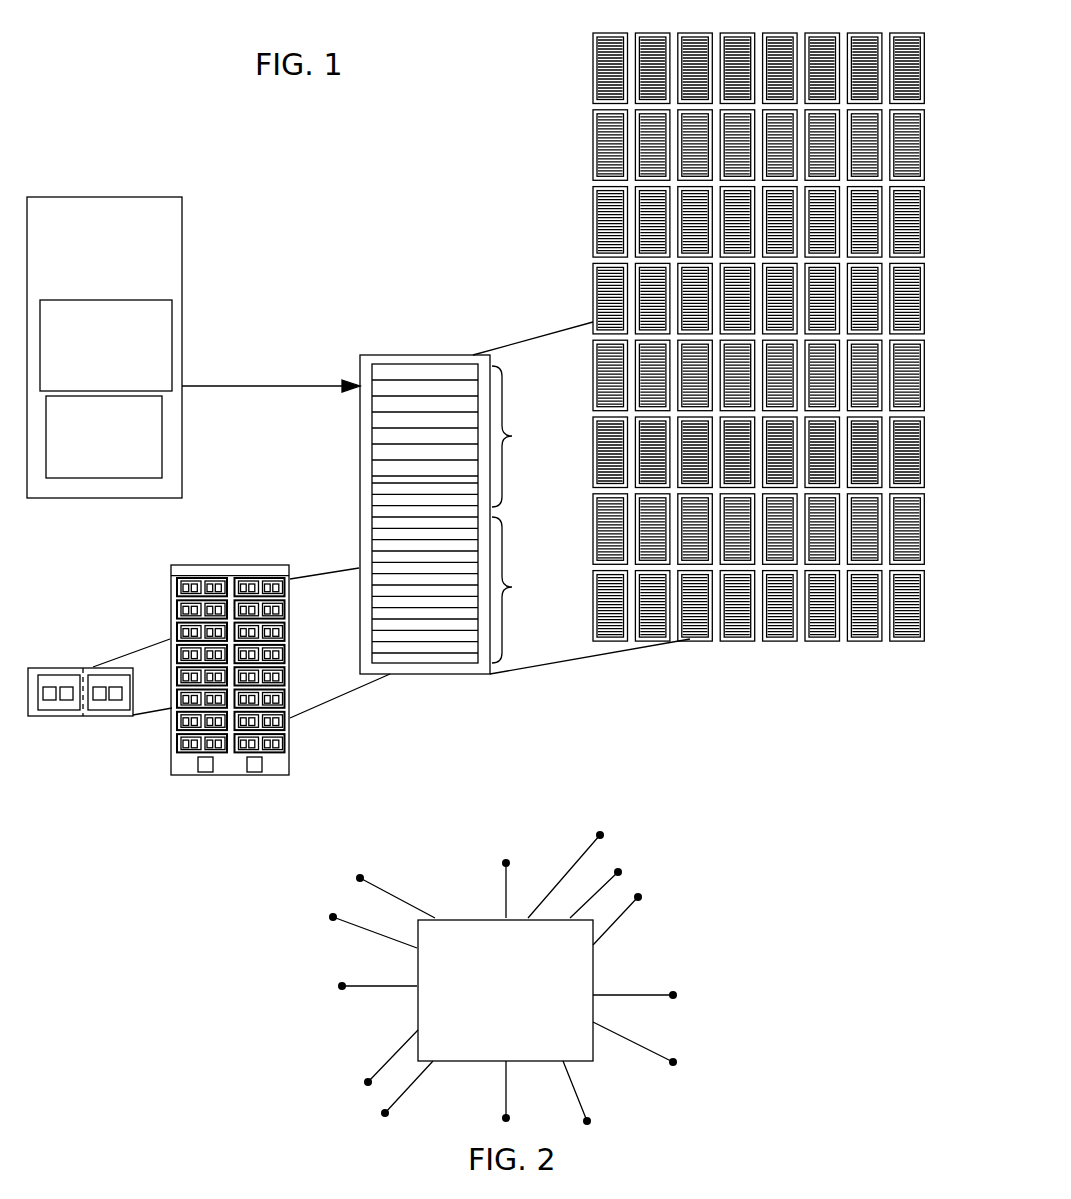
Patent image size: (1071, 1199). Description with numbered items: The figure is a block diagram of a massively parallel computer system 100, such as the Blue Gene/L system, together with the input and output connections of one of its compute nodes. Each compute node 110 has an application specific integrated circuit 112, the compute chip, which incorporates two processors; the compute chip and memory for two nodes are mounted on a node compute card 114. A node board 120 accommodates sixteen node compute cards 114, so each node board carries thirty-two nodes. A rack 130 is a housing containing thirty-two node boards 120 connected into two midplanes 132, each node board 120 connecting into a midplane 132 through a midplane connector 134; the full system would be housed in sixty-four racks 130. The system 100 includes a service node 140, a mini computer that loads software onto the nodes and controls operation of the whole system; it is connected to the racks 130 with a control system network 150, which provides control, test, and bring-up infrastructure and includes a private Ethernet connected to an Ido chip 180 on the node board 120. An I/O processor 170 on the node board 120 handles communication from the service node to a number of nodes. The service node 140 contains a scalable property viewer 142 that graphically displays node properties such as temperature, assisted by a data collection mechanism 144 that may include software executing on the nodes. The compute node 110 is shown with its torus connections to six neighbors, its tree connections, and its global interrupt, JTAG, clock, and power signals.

In FIG. 1, the massively parallel computer system 100 is at (228, 190).
In FIG. 1, the compute node 110 is at (50, 667).
In FIG. 2, the compute node 110 is at (494, 1001).
In FIG. 1, the application specific integrated circuit 112 is at (48, 716).
In FIG. 1, the node compute card 114 is at (100, 716).
In FIG. 1, the node board 120 is at (289, 624).
In FIG. 1, the rack 130 is at (401, 355).
In FIG. 1, the midplane 132 is at (542, 514).
In FIG. 1, the midplane connector 134 is at (170, 571).
In FIG. 1, the service node 140 is at (97, 294).
In FIG. 1, the scalable property viewer 142 is at (172, 315).
In FIG. 1, the data collection mechanism 144 is at (162, 457).
In FIG. 1, the control system network 150 is at (226, 385).
In FIG. 1, the I/O processor 170 is at (205, 772).
In FIG. 1, the Ido chip 180 is at (255, 772).